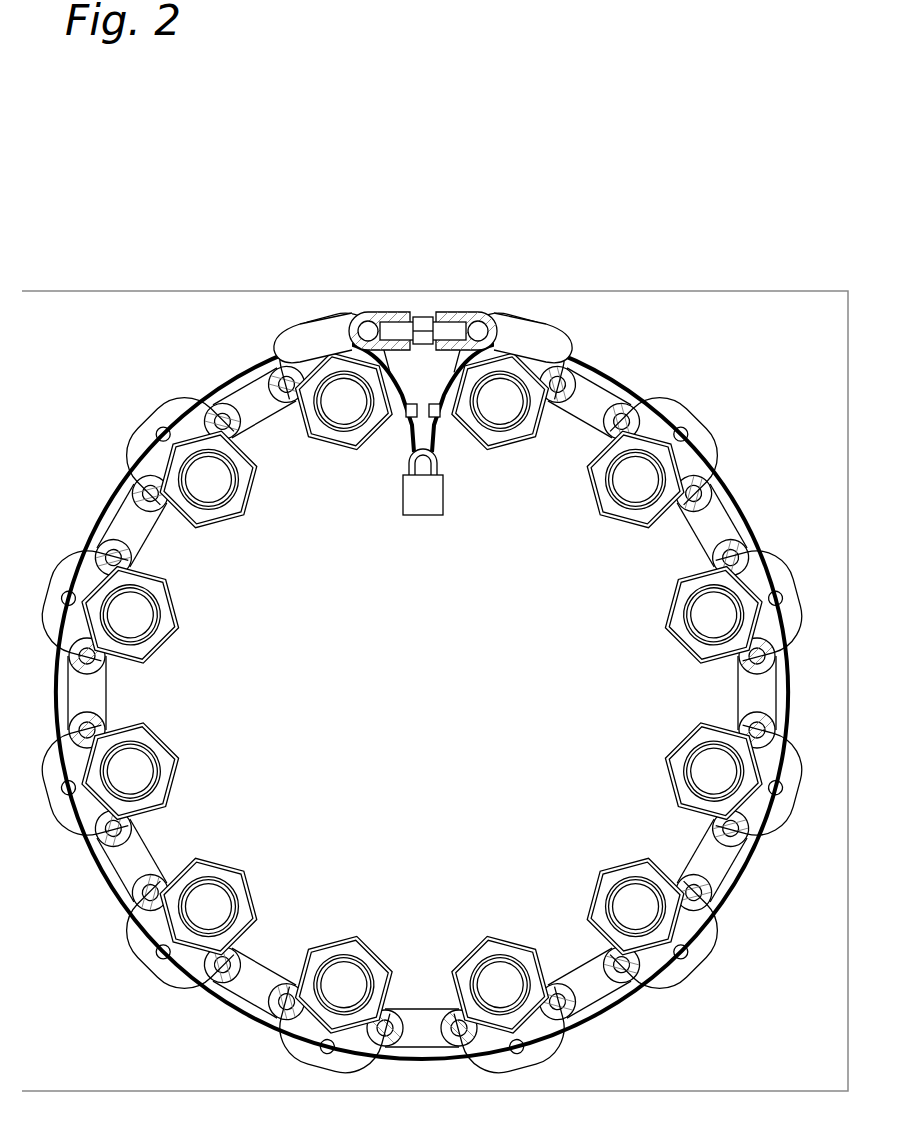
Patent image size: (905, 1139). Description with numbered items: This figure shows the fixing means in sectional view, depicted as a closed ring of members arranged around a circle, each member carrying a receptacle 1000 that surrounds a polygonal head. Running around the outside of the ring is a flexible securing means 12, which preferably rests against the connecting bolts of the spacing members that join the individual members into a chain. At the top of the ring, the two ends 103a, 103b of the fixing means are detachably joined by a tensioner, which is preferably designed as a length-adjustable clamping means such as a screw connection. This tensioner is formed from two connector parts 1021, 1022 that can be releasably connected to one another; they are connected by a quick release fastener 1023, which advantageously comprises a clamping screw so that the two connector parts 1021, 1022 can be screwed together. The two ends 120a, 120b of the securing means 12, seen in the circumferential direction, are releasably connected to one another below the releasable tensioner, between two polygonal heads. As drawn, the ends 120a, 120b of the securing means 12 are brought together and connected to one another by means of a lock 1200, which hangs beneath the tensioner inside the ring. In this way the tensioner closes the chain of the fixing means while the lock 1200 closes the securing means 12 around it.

The flexible securing means 12 is at (611, 380).
The receptacle 1000 is at (169, 474).
The end of the fixing means 103a is at (332, 318).
The end of the fixing means 103b is at (547, 325).
The connector part 1021 is at (397, 313).
The connector part 1022 is at (481, 313).
The quick release fastener 1023 is at (425, 317).
The end of the securing means 120a is at (400, 418).
The end of the securing means 120b is at (443, 416).
The lock for the ends of the securing means 1200 is at (428, 517).